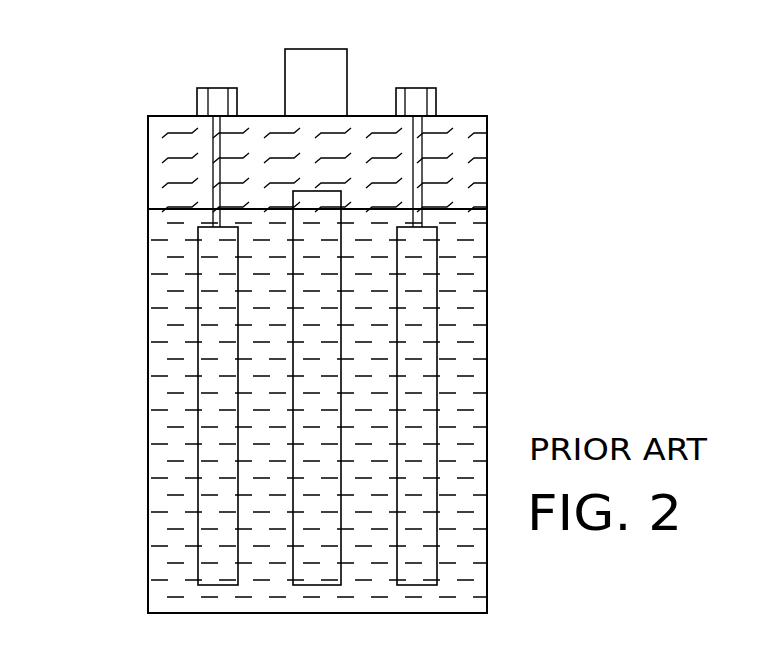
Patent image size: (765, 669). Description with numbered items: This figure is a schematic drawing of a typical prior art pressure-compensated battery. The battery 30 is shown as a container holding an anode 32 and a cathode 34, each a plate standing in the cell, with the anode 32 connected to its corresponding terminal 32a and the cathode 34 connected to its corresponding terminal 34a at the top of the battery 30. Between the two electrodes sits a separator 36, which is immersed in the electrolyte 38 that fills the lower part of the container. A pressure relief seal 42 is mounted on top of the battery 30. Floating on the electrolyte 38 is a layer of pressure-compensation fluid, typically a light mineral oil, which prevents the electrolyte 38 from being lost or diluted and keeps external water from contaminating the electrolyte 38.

The battery 30 is at (617, 297).
The anode 32 is at (432, 385).
The terminal 32a is at (435, 99).
The cathode 34 is at (203, 418).
The terminal 34a is at (217, 88).
The separator 36 is at (313, 569).
The electrolyte 38 is at (458, 553).
The pressure relief seal 42 is at (323, 78).